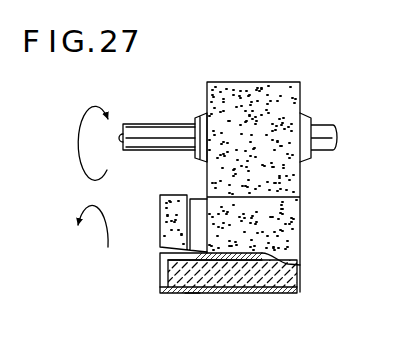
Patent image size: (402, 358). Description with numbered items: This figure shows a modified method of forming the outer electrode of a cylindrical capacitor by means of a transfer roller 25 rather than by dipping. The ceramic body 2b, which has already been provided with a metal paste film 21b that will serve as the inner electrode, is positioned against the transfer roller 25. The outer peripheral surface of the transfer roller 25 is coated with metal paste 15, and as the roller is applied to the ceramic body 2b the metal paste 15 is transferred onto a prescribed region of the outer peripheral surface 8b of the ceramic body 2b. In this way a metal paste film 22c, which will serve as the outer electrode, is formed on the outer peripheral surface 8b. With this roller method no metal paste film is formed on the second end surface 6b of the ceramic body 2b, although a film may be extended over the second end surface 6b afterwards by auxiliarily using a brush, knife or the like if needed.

The metal paste 15 is at (262, 82).
The transfer roller 25 is at (304, 95).
The metal paste film 22c is at (298, 223).
The ceramic body 2b is at (302, 270).
The second end surface 6b is at (300, 283).
The metal paste film 21b is at (180, 293).
The outer peripheral surface 8b is at (192, 293).